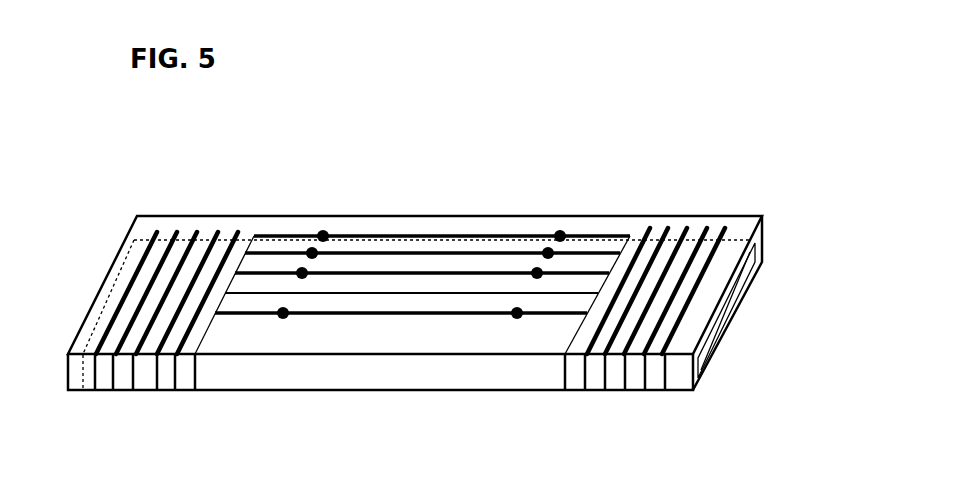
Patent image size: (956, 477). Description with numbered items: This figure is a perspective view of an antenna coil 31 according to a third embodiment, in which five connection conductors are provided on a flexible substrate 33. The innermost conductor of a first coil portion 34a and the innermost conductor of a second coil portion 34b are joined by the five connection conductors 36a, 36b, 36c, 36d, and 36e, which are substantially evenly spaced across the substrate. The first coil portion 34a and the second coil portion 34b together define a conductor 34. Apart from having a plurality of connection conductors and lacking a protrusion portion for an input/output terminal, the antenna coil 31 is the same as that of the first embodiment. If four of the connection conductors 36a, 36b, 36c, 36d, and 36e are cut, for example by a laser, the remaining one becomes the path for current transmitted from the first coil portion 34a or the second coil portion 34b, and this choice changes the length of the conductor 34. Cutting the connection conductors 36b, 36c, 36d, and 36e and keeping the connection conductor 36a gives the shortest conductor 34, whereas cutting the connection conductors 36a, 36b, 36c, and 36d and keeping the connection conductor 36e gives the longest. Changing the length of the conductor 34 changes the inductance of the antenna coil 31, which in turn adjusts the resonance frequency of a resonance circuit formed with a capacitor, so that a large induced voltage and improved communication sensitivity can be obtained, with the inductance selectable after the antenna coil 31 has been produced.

The antenna coil 31 is at (197, 208).
The flexible substrate 33 is at (763, 221).
The conductor 34 is at (449, 346).
The first coil portion 34a is at (198, 398).
The second coil portion 34b is at (562, 407).
The connection conductor 36a is at (373, 293).
The connection conductor 36b is at (412, 313).
The connection conductor 36c is at (435, 273).
The connection conductor 36d is at (348, 253).
The connection conductor 36e is at (290, 236).